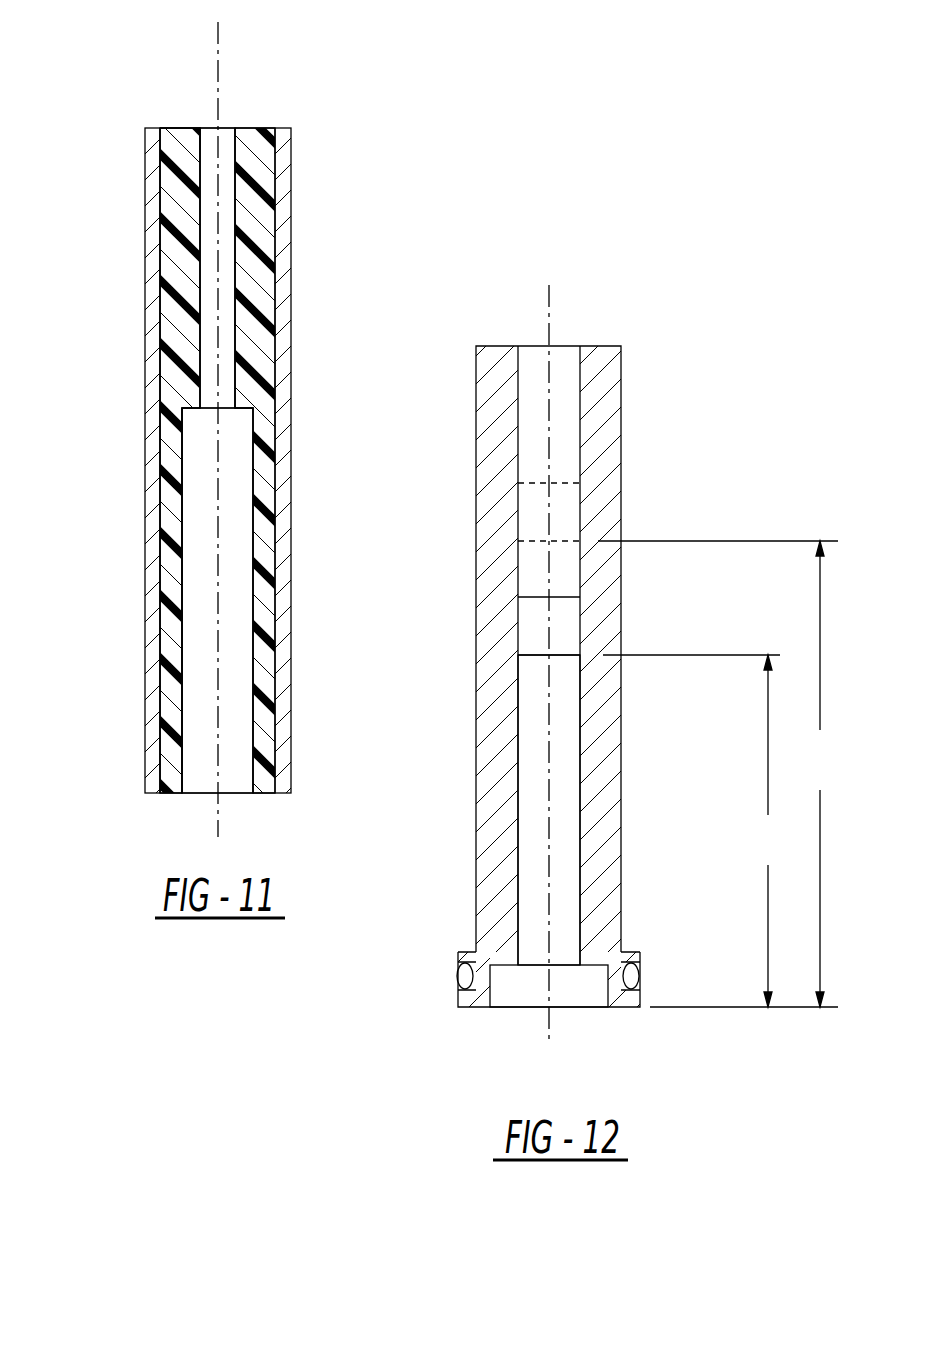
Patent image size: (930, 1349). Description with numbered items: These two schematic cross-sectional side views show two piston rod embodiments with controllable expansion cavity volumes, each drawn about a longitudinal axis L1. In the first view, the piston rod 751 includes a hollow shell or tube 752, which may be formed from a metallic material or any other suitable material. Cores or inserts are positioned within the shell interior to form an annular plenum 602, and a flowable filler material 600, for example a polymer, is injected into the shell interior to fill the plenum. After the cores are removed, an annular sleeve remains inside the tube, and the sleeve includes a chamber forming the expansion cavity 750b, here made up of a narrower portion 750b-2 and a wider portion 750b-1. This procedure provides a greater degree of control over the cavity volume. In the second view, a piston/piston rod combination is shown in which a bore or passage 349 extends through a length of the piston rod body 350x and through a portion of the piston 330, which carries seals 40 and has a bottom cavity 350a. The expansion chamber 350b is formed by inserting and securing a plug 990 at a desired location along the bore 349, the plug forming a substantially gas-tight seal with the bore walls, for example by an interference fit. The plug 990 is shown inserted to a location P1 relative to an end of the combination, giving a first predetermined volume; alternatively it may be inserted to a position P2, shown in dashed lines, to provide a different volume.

In FIG. 11, the longitudinal axis L1 is at (219, 48).
In FIG. 12, the longitudinal axis L1 is at (550, 297).
In FIG. 11, the annular plenum 602 is at (173, 147).
In FIG. 11, the flowable filler material 600 is at (172, 405).
In FIG. 11, the hollow shell or tube 752 is at (145, 230).
In FIG. 11, the piston rod 751 is at (285, 160).
In FIG. 11, the expansion cavity 750b is at (225, 257).
In FIG. 11, the portion of expansion cavity 750b-1 is at (200, 603).
In FIG. 11, the portion of expansion cavity 750b-2 is at (205, 338).
In FIG. 12, the bore or passage 349 is at (537, 358).
In FIG. 12, the housing body 350x is at (563, 423).
In FIG. 12, the expansion chamber 350b is at (563, 833).
In FIG. 12, the housing cavity 350a is at (520, 995).
In FIG. 12, the plug 990 is at (533, 510).
In FIG. 12, the piston 330 is at (458, 957).
In FIG. 12, the O-ring seal 40 is at (633, 977).
In FIG. 12, the location p1 P1 is at (693, 831).
In FIG. 12, the position p2 P2 is at (718, 774).